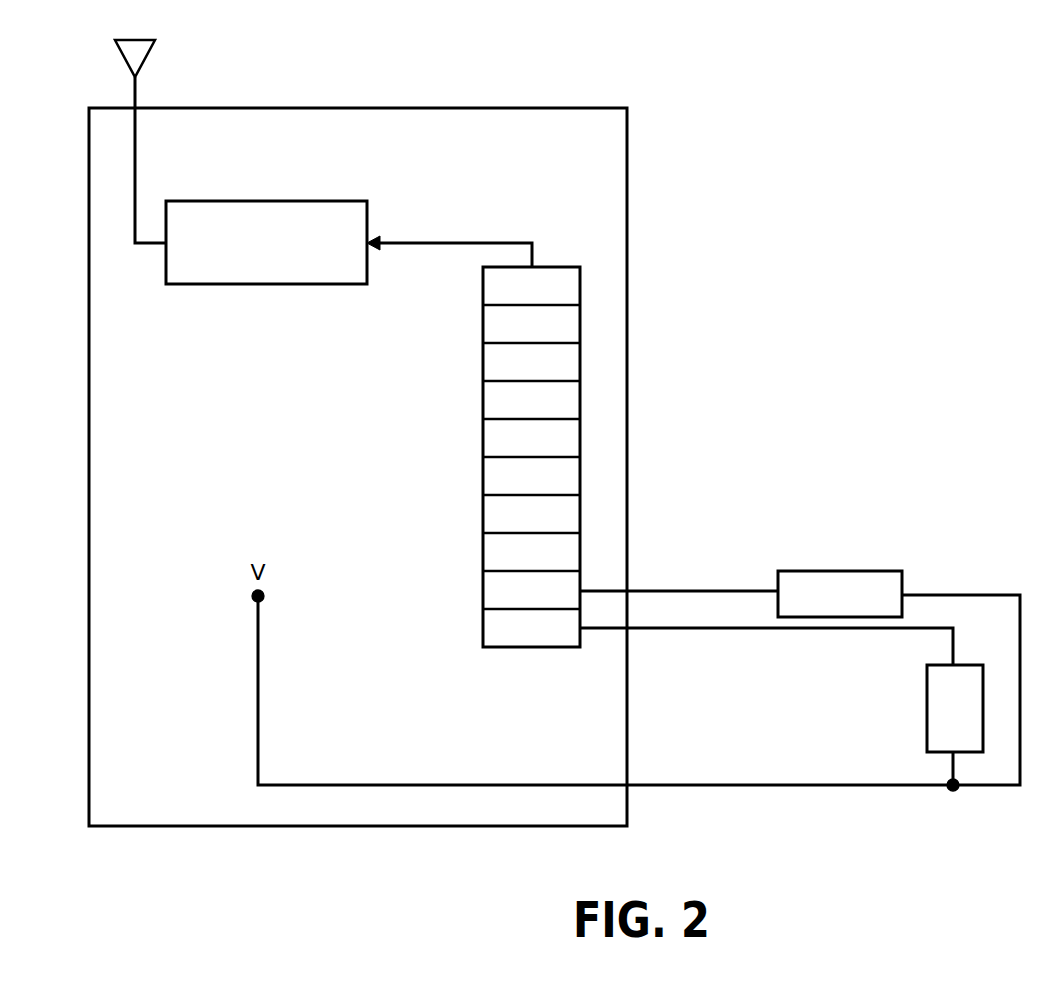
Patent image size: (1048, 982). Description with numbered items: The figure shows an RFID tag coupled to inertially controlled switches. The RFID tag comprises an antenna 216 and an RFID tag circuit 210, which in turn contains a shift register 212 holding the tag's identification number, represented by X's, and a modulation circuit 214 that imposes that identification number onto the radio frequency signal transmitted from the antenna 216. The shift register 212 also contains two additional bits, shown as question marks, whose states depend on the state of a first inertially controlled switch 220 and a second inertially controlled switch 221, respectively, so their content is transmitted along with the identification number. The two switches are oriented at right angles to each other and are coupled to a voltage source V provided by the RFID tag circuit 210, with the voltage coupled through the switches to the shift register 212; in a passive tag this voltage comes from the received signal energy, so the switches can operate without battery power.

The RFID tag circuit 210 is at (612, 141).
The shift register 212 is at (583, 358).
The modulation circuit 214 is at (240, 285).
The antenna 216 is at (123, 57).
The inertially controlled switch 220 is at (825, 571).
The inertially controlled switch 221 is at (927, 713).